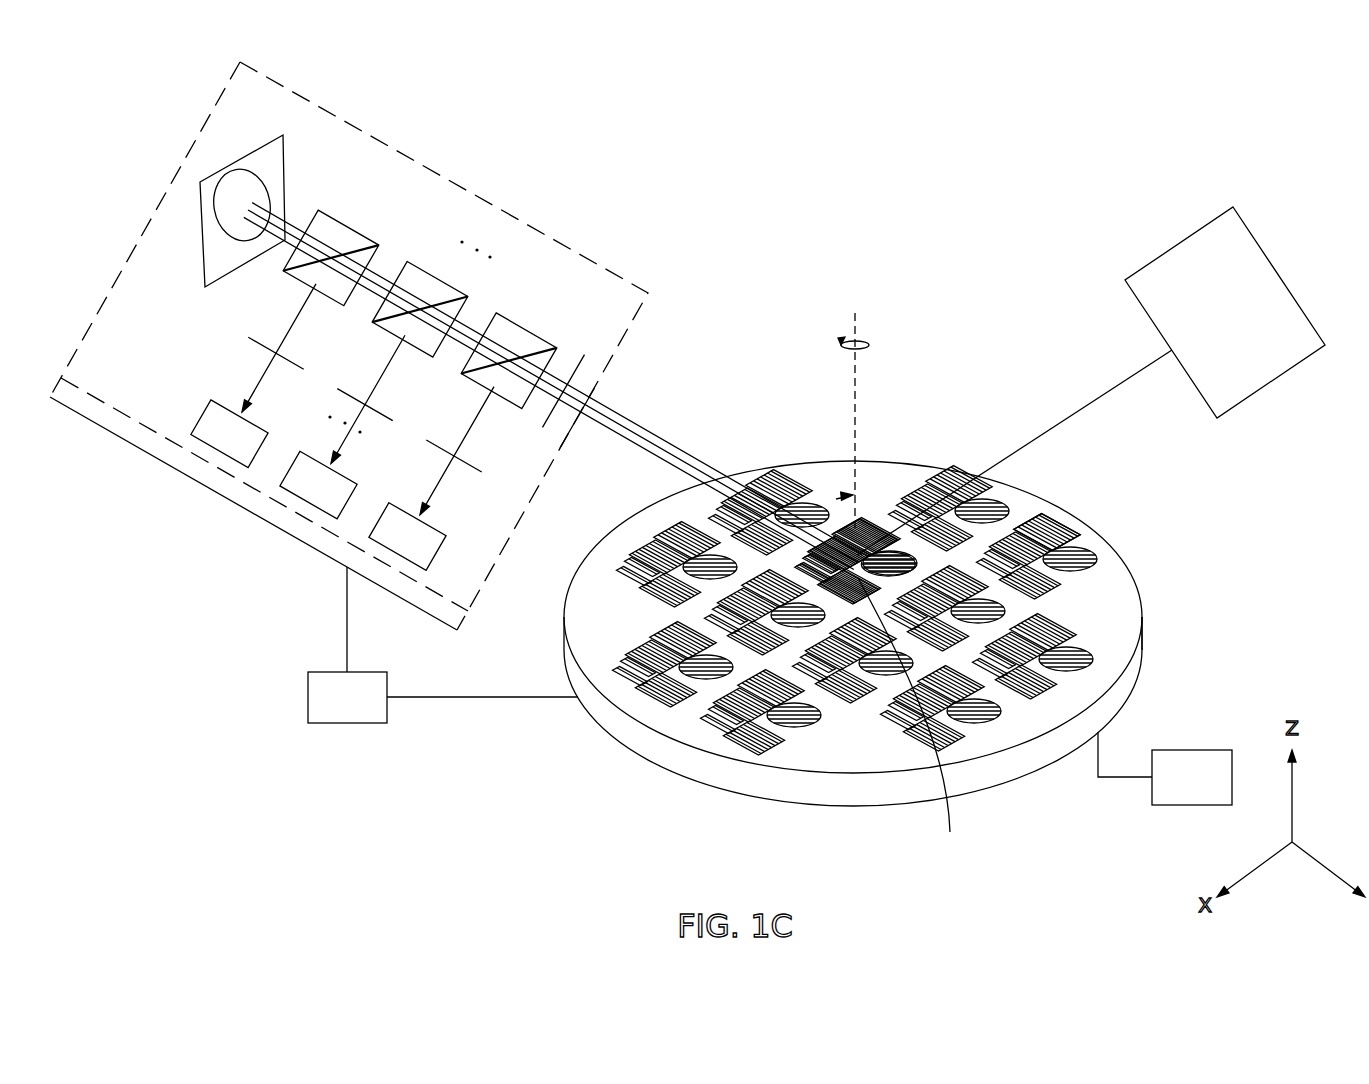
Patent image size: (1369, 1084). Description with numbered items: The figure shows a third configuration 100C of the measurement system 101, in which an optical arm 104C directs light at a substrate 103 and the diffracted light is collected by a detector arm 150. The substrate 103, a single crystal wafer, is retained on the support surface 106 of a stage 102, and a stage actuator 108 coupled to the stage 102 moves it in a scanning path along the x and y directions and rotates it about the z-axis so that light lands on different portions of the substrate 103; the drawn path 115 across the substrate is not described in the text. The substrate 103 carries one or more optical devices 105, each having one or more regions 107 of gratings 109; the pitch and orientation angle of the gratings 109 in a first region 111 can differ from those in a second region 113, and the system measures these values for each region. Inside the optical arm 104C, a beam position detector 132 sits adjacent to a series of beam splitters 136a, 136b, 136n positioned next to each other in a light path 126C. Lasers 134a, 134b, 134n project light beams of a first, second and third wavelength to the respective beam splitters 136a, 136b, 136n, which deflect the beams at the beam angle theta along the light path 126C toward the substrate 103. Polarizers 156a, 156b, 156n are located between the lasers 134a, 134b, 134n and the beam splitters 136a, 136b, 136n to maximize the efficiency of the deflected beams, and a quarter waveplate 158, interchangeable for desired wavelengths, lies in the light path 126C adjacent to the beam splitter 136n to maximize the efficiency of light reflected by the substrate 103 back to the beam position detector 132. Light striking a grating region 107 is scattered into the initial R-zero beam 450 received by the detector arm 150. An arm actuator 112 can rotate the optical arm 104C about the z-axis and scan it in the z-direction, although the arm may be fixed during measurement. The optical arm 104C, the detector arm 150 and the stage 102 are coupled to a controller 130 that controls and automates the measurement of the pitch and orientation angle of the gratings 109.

The third configuration 100C is at (128, 142).
The optical arm 104C is at (428, 162).
The arm actuator 112 is at (263, 520).
The beam position detector 132 is at (252, 152).
The light path 126C is at (650, 402).
The beam splitter 136a is at (355, 228).
The beam splitter 136b is at (440, 275).
The beam splitter 136n is at (530, 322).
The polarizer 156a is at (260, 340).
The polarizer 156b is at (350, 390).
The polarizer 156n is at (438, 438).
The laser 134a is at (212, 402).
The laser 134b is at (305, 452).
The laser 134n is at (392, 503).
The quarter waveplate 158 is at (575, 368).
The controller 130 is at (366, 709).
The measurement system 101 is at (1108, 180).
The stage 102 is at (1132, 692).
The substrate 103 is at (1130, 602).
The support surface 106 is at (1135, 660).
The region 107 is at (1095, 560).
The optical device 105 is at (1080, 532).
The gratings 109 is at (1055, 522).
The first region 111 is at (893, 484).
The second region 113 is at (972, 460).
The scan path 115 is at (912, 719).
The detector arm 150 is at (1285, 252).
The initial R0 beam 450 is at (1087, 402).
The stage actuator 108 is at (1174, 787).